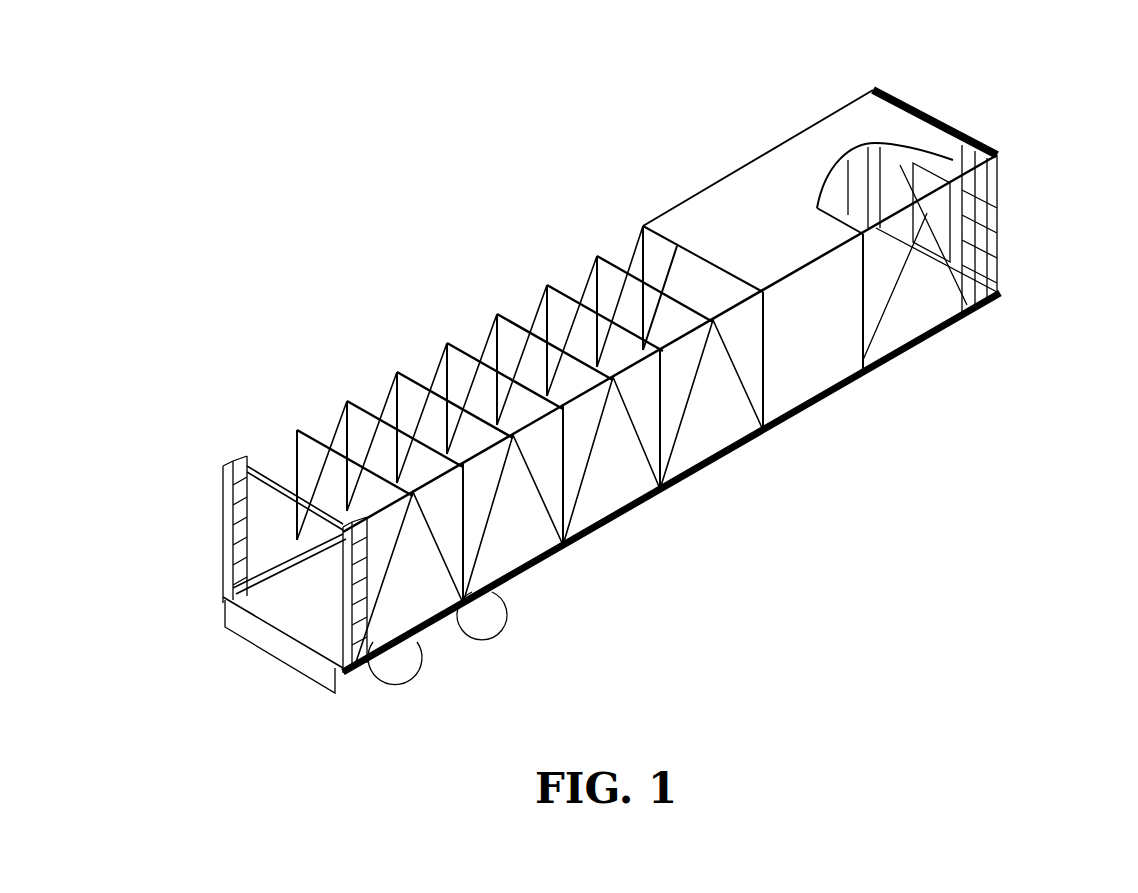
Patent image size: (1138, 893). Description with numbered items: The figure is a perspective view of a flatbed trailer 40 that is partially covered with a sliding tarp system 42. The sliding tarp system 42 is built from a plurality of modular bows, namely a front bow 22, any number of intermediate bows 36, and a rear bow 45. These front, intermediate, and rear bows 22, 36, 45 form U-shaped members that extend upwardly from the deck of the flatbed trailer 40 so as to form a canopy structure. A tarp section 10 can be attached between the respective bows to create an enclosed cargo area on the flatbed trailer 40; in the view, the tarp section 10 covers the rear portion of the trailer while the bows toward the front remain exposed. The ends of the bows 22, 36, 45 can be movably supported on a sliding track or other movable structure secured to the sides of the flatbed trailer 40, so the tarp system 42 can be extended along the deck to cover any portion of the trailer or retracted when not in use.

The tarp section 10 is at (817, 137).
The sliding tarp system 42 is at (927, 150).
The front bow 22 is at (1000, 280).
The intermediate bows 36 is at (660, 420).
The rear bow 45 is at (208, 504).
The flatbed trailer 40 is at (313, 617).